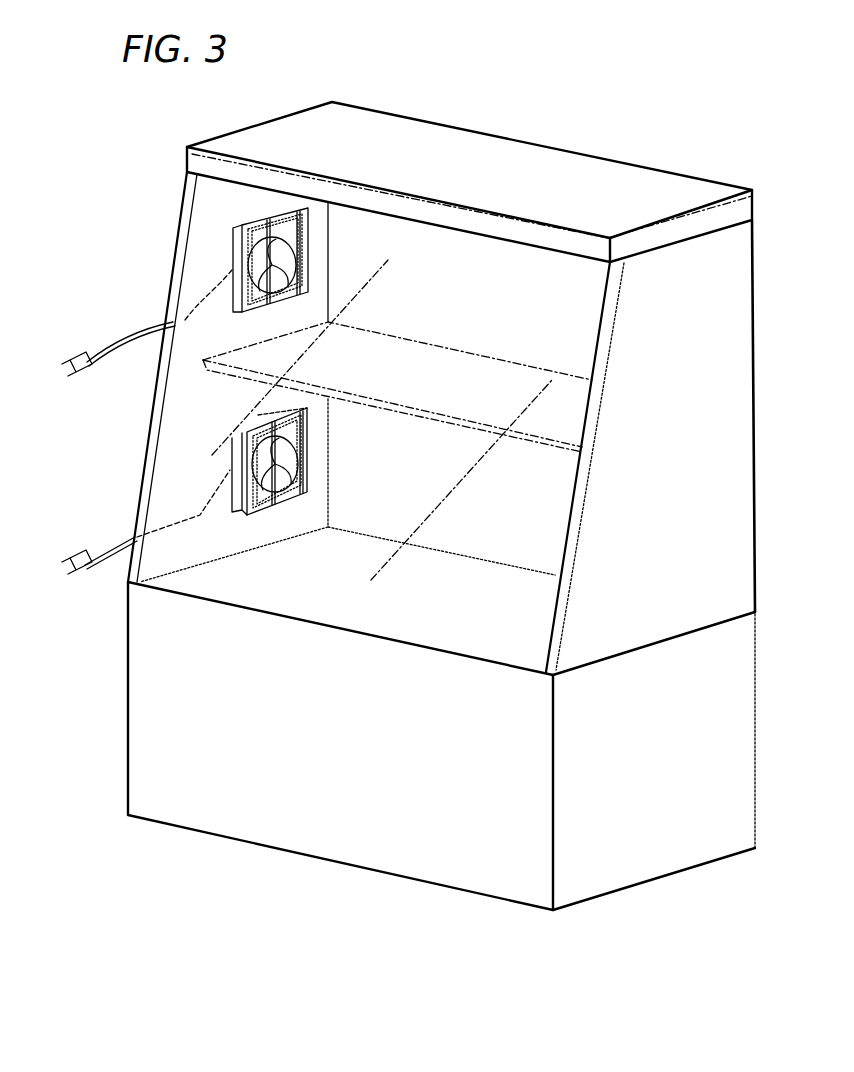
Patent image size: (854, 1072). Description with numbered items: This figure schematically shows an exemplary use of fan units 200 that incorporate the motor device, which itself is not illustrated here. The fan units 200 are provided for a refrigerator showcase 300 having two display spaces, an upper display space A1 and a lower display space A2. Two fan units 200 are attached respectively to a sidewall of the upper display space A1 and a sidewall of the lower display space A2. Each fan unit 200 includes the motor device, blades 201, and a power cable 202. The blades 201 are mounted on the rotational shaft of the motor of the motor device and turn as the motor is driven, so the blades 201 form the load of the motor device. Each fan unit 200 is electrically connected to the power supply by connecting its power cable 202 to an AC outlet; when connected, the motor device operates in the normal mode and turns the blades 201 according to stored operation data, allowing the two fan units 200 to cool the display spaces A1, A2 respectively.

The refrigerator showcase 300 is at (678, 183).
The fan unit 200 is at (237, 245).
The blades 201 is at (297, 243).
The power cable 202 is at (76, 360).
The upper display space A1 is at (510, 263).
The lower display space A2 is at (317, 572).